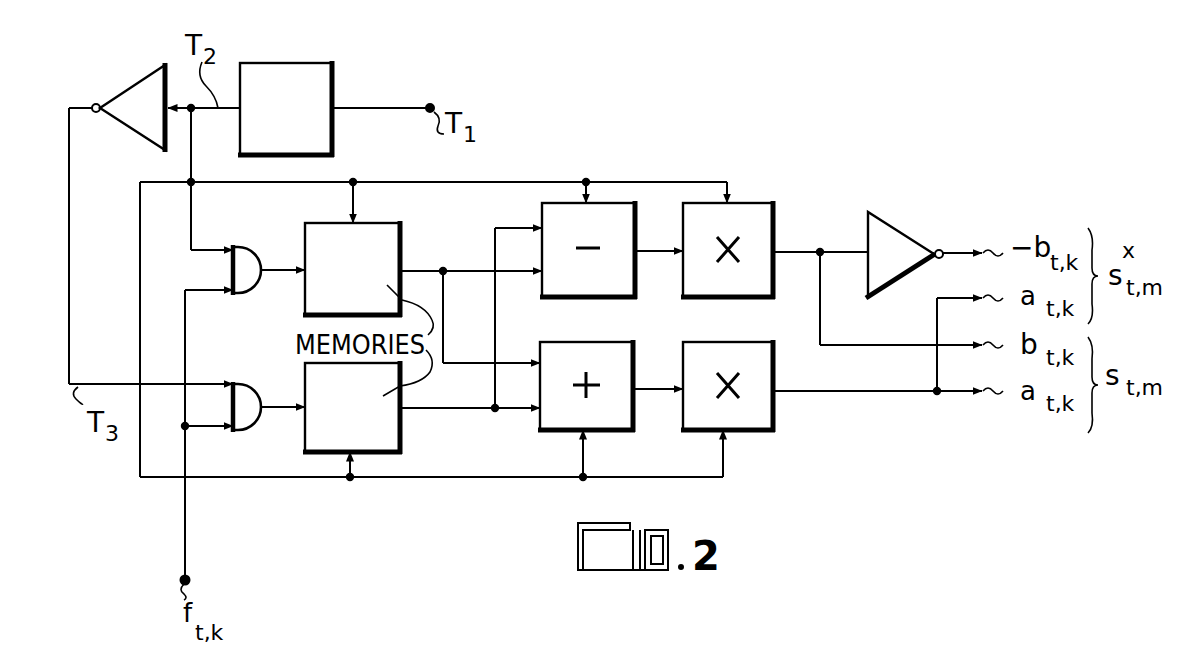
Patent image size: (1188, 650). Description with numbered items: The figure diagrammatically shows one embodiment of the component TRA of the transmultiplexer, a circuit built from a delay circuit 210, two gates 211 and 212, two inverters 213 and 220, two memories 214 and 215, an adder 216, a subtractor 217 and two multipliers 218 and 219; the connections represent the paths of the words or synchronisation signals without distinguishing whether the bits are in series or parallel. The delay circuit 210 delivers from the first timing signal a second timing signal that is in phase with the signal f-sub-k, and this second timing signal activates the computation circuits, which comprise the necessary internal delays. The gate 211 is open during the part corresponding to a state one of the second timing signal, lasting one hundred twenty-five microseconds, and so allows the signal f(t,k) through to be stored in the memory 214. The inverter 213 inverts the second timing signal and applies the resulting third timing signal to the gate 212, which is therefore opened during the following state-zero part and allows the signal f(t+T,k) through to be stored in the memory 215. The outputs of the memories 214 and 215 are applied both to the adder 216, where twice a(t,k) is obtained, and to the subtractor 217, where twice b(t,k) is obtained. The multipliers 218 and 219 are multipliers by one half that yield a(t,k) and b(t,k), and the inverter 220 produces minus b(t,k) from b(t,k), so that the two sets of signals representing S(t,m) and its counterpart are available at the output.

The delay circuit 210 is at (279, 64).
The gate 211 is at (255, 250).
The gate 212 is at (247, 385).
The inverter 213 is at (126, 84).
The memory 214 is at (403, 230).
The memory 215 is at (403, 440).
The adder 216 is at (612, 433).
The subtractor 217 is at (628, 300).
The multiplier 218 is at (770, 209).
The multiplier 219 is at (766, 433).
The inverter 220 is at (894, 229).